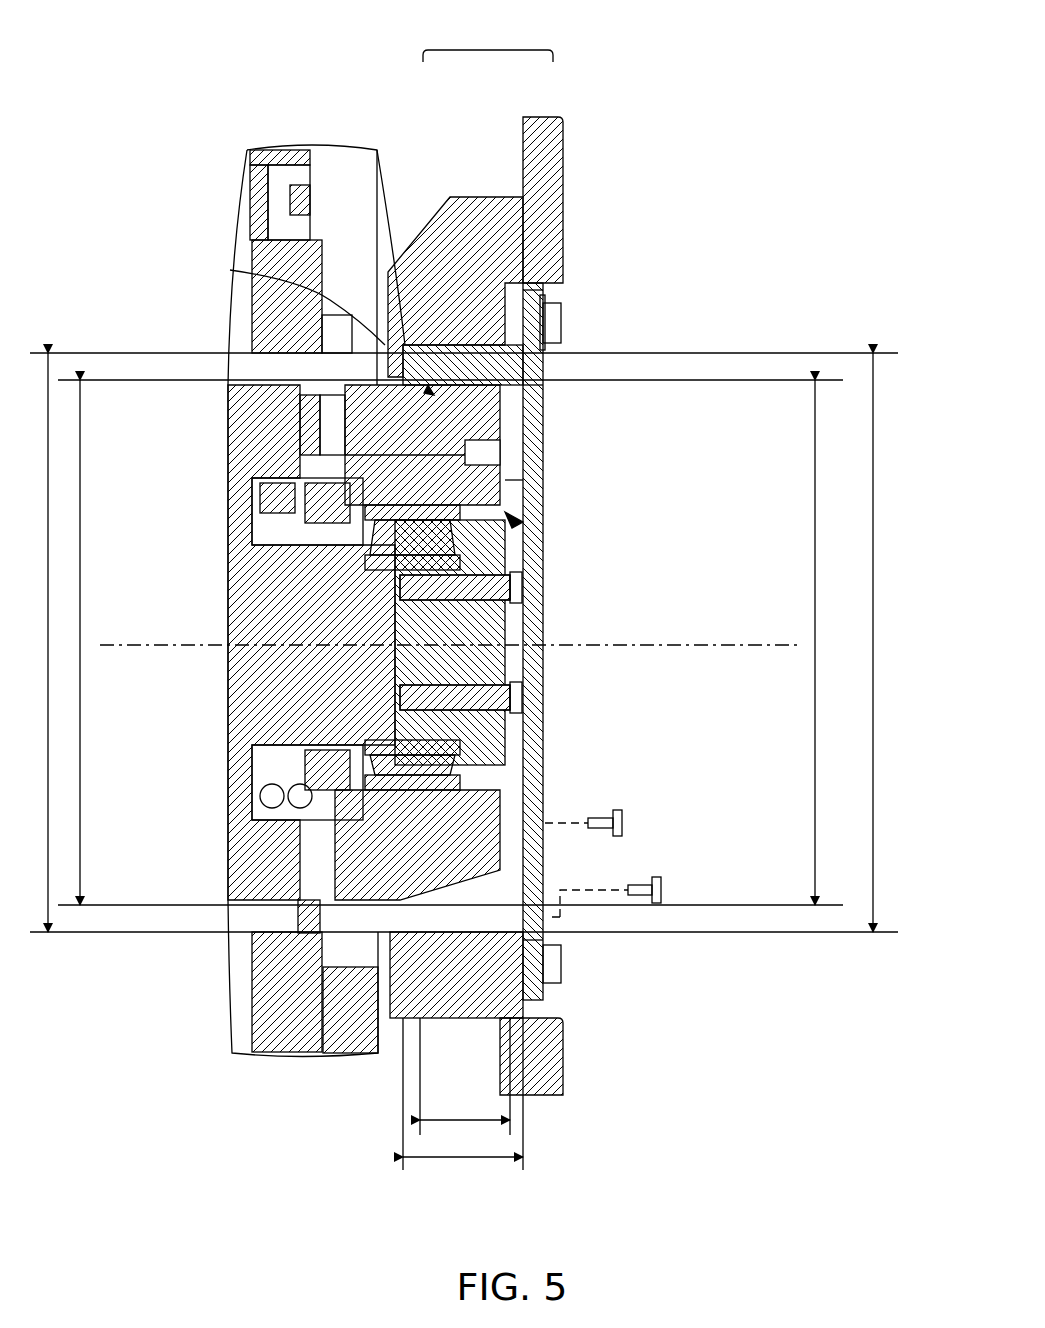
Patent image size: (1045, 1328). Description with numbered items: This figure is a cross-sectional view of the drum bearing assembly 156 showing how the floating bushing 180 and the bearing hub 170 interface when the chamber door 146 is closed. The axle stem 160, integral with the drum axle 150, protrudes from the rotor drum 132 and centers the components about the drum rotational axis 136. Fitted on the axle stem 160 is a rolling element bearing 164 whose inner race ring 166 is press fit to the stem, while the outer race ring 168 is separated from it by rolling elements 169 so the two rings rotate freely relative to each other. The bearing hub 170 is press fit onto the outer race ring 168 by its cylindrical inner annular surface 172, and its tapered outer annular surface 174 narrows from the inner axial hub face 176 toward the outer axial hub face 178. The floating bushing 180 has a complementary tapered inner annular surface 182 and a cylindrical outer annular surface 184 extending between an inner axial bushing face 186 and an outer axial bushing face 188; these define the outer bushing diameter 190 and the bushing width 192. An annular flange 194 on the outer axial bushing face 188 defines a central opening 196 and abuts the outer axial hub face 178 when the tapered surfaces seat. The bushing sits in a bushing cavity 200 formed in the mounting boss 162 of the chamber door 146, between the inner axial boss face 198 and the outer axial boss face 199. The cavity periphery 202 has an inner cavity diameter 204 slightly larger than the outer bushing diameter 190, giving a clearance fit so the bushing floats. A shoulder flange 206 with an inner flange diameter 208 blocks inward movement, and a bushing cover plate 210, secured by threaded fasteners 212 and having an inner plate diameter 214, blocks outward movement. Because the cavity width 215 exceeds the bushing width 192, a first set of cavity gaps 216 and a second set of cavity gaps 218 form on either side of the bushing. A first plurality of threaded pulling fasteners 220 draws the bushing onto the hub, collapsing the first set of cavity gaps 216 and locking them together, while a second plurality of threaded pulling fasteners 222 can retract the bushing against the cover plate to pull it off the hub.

The rotor drum 132 is at (243, 428).
The drum rotational axis 136 is at (688, 650).
The chamber door 146 is at (565, 142).
The drum axle 150 is at (250, 585).
The drum bearing assembly 156 is at (488, 50).
The axle stem 160 is at (540, 617).
The mounting boss 162 is at (497, 210).
The rolling element bearing 164 is at (545, 732).
The inner race ring 166 is at (375, 725).
The outer race ring 168 is at (268, 818).
The rolling elements 169 is at (330, 762).
The bearing hub 170 is at (300, 515).
The inner annular surface 172 is at (505, 520).
The outer annular surface 174 is at (430, 388).
The inner axial hub face 176 is at (300, 455).
The outer axial hub face 178 is at (520, 480).
The floating bushing 180 is at (545, 405).
The inner annular surface 182 is at (540, 430).
The outer annular surface 184 is at (548, 345).
The inner axial bushing face 186 is at (342, 378).
The outer axial bushing face 188 is at (538, 388).
The outer bushing diameter 190 is at (876, 655).
The bushing width 192 is at (458, 1115).
The annular flange 194 is at (525, 480).
The central opening 196 is at (548, 522).
The inner axial boss face 198 is at (325, 265).
The outer axial boss face 199 is at (545, 292).
The bushing cavity 200 is at (480, 930).
The cavity periphery 202 is at (378, 148).
The inner cavity diameter 204 is at (52, 625).
The shoulder flange 206 is at (315, 330).
The inner flange diameter 208 is at (82, 825).
The bushing cover plate 210 is at (545, 312).
The threaded fasteners 212 is at (560, 325).
The inner plate diameter 214 is at (813, 725).
The cavity width 215 is at (470, 1160).
The first set of cavity gaps 216 is at (340, 1010).
The second set of cavity gaps 218 is at (540, 932).
The first plurality of threaded pulling fasteners 220 is at (598, 815).
The second plurality of threaded pulling fasteners 222 is at (638, 883).